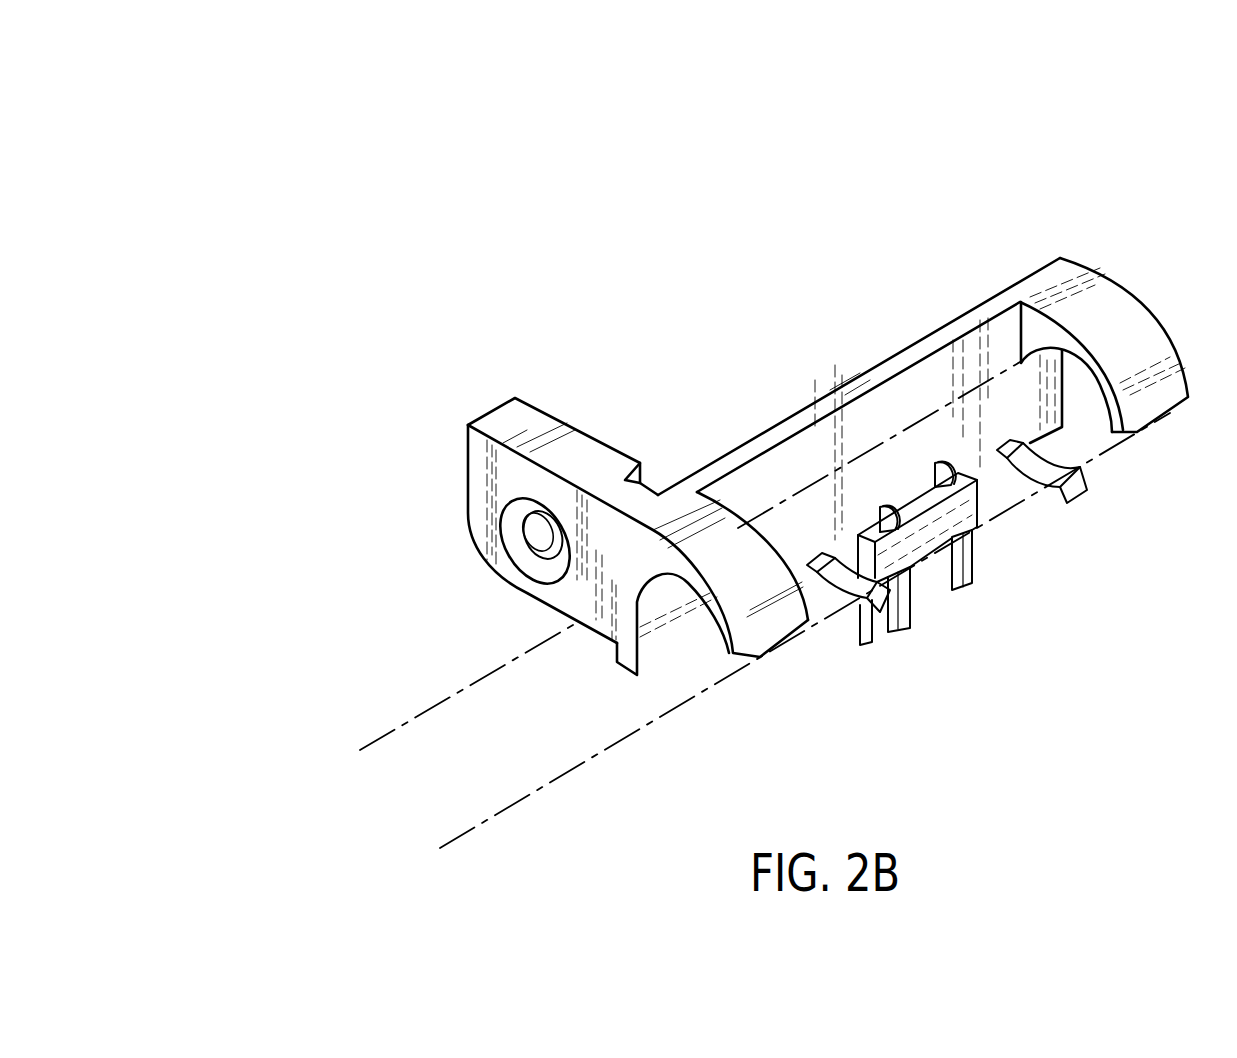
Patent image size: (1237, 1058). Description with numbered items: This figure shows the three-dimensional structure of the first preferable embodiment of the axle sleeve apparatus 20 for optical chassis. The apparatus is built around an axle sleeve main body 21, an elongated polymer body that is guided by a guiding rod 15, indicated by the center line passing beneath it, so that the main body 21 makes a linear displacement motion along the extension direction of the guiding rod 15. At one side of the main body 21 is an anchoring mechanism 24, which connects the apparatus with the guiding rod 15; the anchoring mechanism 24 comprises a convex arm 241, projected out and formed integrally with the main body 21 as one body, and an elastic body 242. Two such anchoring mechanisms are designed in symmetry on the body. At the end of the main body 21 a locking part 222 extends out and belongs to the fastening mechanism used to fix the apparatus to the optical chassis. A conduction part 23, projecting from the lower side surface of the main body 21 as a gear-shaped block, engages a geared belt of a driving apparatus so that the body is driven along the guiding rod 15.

The guiding rod 15 is at (487, 720).
The axle sleeve apparatus for optical chassis 20 is at (973, 205).
The axle sleeve main body 21 is at (850, 383).
The locking part 222 is at (533, 423).
The conduction part 23 is at (967, 515).
The anchoring mechanism 24 is at (995, 697).
The convex arm 241 is at (788, 632).
The elastic body 242 is at (900, 628).